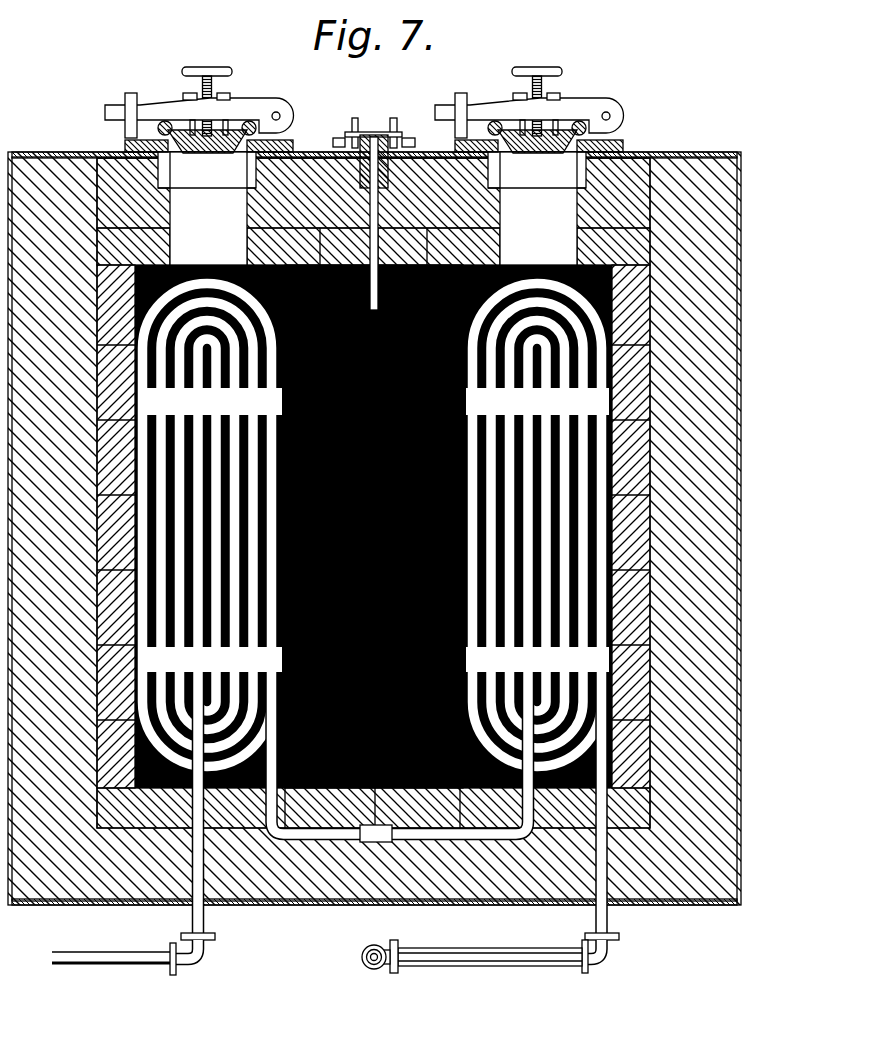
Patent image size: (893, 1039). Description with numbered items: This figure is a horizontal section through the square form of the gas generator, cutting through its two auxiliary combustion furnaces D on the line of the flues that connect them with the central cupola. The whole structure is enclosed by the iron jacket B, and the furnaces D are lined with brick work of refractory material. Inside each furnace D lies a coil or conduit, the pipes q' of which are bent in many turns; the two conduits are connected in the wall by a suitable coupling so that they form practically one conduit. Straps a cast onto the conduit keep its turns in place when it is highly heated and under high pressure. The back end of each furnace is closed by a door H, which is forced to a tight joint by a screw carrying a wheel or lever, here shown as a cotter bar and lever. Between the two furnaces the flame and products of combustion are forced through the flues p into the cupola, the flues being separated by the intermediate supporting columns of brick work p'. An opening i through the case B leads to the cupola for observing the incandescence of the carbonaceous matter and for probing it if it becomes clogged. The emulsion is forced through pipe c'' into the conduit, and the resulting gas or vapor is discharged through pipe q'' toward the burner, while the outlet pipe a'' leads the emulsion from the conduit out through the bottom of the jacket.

The iron jacket B is at (44, 156).
The auxiliary combustion furnace D is at (135, 270).
The door H is at (232, 135).
The opening i is at (371, 147).
The flue p is at (374, 526).
The supporting column of brick work p' is at (374, 527).
The strap a is at (373, 532).
The pipe q' is at (369, 563).
The emulsion outlet pipe a'' is at (203, 838).
The emulsion pipe c'' is at (102, 964).
The gas discharge pipe q'' is at (506, 850).